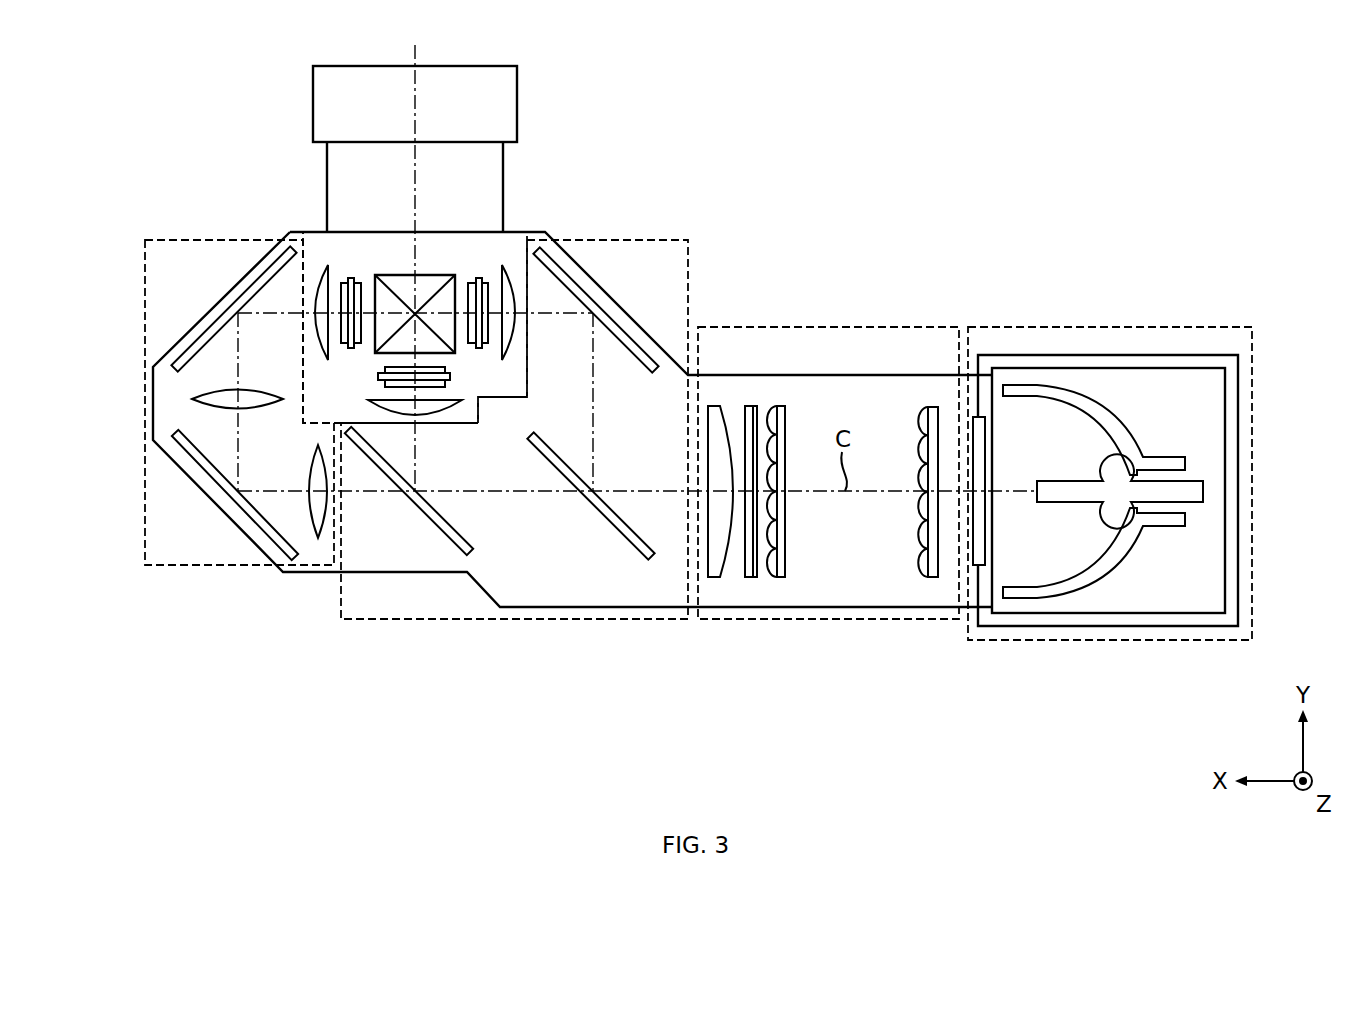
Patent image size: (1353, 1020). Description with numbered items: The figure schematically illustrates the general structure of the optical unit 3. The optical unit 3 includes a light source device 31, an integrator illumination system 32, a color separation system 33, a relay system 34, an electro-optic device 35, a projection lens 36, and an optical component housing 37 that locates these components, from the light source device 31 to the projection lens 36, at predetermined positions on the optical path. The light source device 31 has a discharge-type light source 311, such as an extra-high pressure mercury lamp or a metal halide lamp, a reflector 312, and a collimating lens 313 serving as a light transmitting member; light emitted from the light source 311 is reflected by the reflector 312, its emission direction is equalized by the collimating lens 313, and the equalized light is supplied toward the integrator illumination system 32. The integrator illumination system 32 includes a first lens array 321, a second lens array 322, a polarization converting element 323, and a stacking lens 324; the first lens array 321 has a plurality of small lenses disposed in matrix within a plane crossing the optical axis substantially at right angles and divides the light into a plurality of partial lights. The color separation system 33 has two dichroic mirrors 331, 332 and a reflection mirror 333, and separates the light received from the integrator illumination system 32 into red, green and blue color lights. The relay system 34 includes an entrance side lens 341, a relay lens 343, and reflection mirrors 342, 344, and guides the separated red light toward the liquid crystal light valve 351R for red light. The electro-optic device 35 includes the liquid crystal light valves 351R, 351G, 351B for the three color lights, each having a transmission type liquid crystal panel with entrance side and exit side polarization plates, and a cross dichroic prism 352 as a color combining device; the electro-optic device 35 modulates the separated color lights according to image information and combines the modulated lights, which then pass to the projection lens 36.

The optical unit 3 is at (662, 114).
The light source device 31 is at (1010, 642).
The light source 311 is at (1077, 494).
The reflector 312 is at (1113, 541).
The collimating lens 313 is at (978, 543).
The integrator illumination system 32 is at (752, 622).
The first lens array 321 is at (934, 408).
The second lens array 322 is at (779, 407).
The polarization converting element 323 is at (752, 407).
The stacking lens 324 is at (718, 407).
The color separation system 33 is at (598, 622).
The dichroic mirror 331 is at (625, 530).
The dichroic mirror 332 is at (445, 530).
The reflection mirror 333 is at (615, 330).
The relay system 34 is at (145, 400).
The entrance side lens 341 is at (318, 520).
The reflection mirror 342 is at (175, 435).
The relay lens 343 is at (252, 398).
The reflection mirror 344 is at (218, 327).
The electro-optic device 35 is at (430, 242).
The liquid crystal light valve for R light 351R is at (350, 275).
The liquid crystal light valve for G light 351G is at (455, 375).
The liquid crystal light valve for B light 351B is at (478, 276).
The cross dichroic prism 352 is at (432, 285).
The projection lens 36 is at (505, 97).
The optical component housing 37 is at (665, 607).